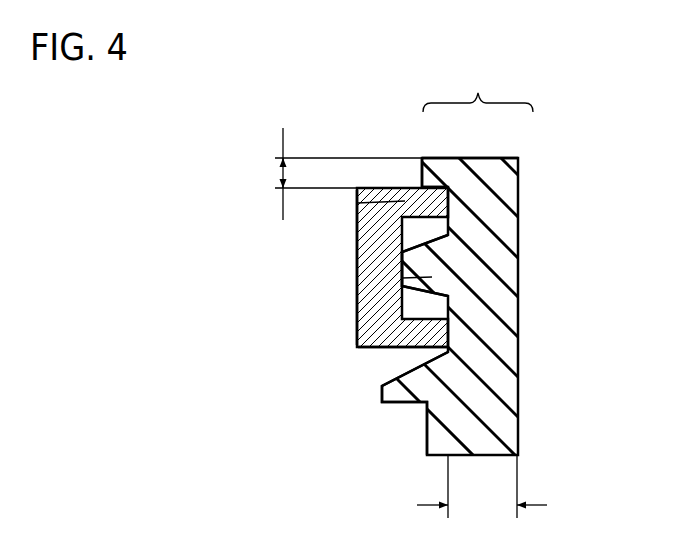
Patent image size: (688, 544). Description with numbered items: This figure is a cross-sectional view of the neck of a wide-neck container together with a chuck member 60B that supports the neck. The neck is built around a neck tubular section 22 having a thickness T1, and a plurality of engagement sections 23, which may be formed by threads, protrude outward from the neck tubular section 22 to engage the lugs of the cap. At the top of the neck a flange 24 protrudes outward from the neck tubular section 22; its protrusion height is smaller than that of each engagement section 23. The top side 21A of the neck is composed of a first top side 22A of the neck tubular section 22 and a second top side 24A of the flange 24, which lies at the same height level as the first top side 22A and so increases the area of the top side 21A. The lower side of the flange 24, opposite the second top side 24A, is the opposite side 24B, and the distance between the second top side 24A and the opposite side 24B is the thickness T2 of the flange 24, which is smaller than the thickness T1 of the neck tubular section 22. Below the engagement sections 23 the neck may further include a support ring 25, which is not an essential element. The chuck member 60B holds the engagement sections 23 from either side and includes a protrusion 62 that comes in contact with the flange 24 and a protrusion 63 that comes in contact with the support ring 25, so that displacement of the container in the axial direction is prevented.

The top side 21A is at (478, 91).
The neck tubular section 22 is at (510, 352).
The first top side 22A is at (498, 158).
The engagement section 23 is at (357, 317).
The flange 24 is at (427, 170).
The second top side 24A is at (448, 158).
The opposite side 24B is at (447, 222).
The support ring 25 is at (395, 403).
The chuck member 60B is at (357, 268).
The protrusion 62 is at (357, 203).
The protrusion 63 is at (382, 347).
The thickness of the neck tubular section T1 is at (496, 486).
The thickness of the flange T2 is at (335, 174).